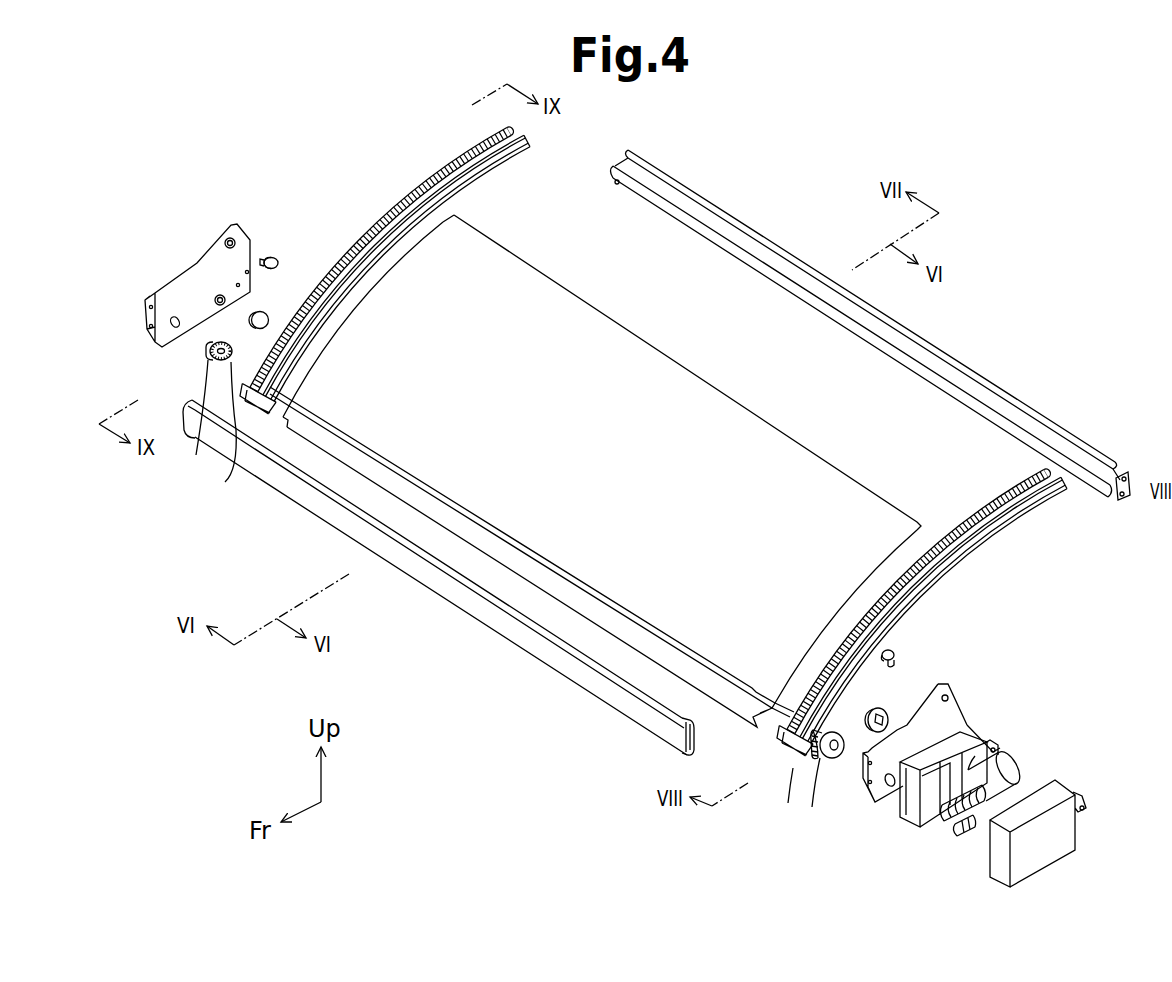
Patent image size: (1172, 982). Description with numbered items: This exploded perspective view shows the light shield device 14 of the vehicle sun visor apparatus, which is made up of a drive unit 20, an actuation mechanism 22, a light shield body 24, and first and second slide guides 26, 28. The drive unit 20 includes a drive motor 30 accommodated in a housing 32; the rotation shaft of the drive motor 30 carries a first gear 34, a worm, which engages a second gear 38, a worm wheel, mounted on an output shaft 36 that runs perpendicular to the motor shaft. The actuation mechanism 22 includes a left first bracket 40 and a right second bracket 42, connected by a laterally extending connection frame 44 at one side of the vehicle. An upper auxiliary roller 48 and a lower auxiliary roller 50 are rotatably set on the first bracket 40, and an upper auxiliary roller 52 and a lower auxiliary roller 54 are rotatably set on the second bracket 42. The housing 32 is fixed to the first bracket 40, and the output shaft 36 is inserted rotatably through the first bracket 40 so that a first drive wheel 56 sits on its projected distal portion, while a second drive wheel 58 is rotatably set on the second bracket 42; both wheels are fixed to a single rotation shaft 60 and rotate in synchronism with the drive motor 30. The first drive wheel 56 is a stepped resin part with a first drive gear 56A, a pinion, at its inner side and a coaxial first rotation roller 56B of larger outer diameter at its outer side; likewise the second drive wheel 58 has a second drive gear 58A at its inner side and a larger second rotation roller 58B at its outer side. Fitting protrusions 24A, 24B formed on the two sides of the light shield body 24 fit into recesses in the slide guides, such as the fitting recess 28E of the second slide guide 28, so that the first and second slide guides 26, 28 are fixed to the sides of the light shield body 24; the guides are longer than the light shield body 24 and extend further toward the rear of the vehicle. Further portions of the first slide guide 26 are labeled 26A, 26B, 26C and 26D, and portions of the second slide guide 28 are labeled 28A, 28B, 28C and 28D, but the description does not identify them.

The light shield device 14 is at (754, 190).
The drive unit 20 is at (985, 756).
The actuation mechanism 22 is at (985, 756).
The light shield body 24 is at (595, 466).
The fitting protrusion 24A is at (850, 597).
The fitting protrusion 24B is at (373, 277).
The first slide guide 26 is at (915, 612).
The inner lip of right guide 26A is at (813, 670).
The rack teeth of right guide 26B is at (907, 560).
The outer rim of right guide 26C is at (898, 585).
The flange of right guide 26D is at (942, 567).
The second slide guide 28 is at (394, 267).
The inner lip of left guide 28A is at (327, 305).
The rack teeth of left guide 28B is at (445, 168).
The outer rim of left guide 28C is at (367, 233).
The flange of left guide 28D is at (480, 174).
The fitting recess 28E is at (418, 205).
The drive motor 30 is at (1022, 775).
The housing 32 is at (1063, 845).
The first gear (worm) 34 is at (946, 816).
The output shaft 36 is at (912, 783).
The second gear (worm wheel) 38 is at (960, 838).
The first bracket 40 is at (972, 694).
The second bracket 42 is at (172, 282).
The connection frame 44 is at (490, 626).
The upper auxiliary roller 48 is at (889, 645).
The lower auxiliary roller 50 is at (876, 707).
The upper auxiliary roller 52 is at (287, 248).
The lower auxiliary roller 54 is at (270, 320).
The first drive wheel 56 is at (778, 797).
The first drive gear (pinion) 56A is at (815, 755).
The first rotation roller 56B is at (812, 807).
The second drive wheel 58 is at (178, 432).
The second drive gear (pinion) 58A is at (225, 482).
The second rotation roller 58B is at (205, 410).
The rotation shaft 60 is at (448, 496).